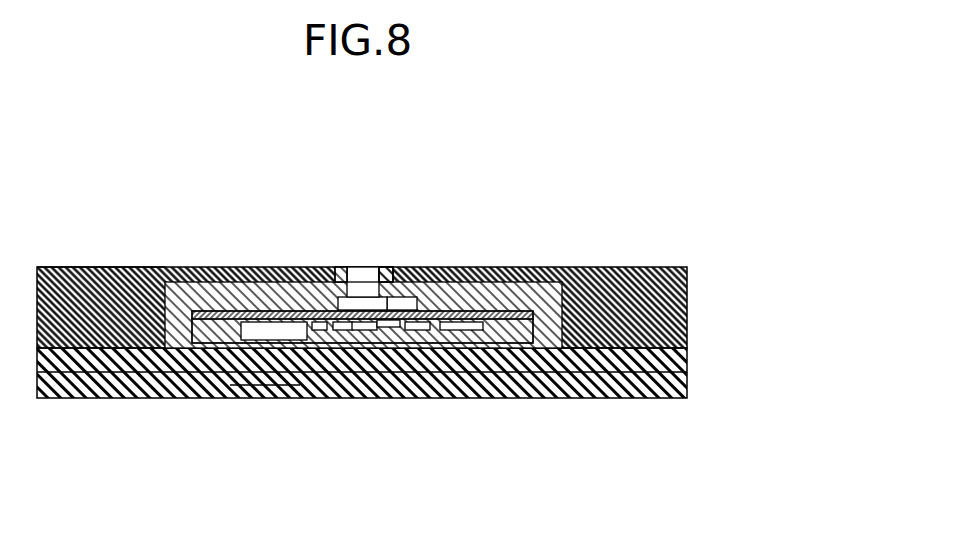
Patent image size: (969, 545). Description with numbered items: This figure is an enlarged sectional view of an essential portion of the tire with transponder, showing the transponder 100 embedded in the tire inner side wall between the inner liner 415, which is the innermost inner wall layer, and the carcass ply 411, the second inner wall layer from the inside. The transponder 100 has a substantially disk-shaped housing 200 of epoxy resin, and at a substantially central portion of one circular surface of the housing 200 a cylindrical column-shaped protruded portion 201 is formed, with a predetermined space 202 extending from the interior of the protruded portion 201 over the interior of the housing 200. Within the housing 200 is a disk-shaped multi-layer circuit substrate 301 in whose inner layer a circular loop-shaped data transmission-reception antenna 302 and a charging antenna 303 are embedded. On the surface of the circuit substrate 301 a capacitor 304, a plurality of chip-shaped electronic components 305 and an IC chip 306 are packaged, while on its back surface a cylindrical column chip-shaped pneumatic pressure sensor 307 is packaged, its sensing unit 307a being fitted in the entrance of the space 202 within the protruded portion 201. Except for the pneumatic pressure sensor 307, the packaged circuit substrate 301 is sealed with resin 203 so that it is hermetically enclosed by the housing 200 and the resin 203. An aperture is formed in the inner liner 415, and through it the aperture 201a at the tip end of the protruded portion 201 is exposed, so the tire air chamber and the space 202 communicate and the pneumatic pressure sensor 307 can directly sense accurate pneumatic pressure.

The transponder 100 is at (465, 198).
The housing 200 is at (567, 270).
The protruded portion 201 is at (387, 280).
The aperture 201a is at (360, 277).
The space 202 is at (343, 277).
The resin 203 is at (394, 393).
The circuit substrate 301 is at (228, 267).
The data transmission-reception antenna 302 is at (131, 393).
The charging antenna 303 is at (195, 393).
The capacitor 304 is at (287, 393).
The chip-shaped electronic components 305 is at (358, 393).
The IC chip 306 is at (478, 393).
The pneumatic pressure sensor 307 is at (440, 278).
The sensing unit 307a is at (420, 281).
The carcass ply 411 is at (255, 393).
The inner liner 415 is at (93, 267).